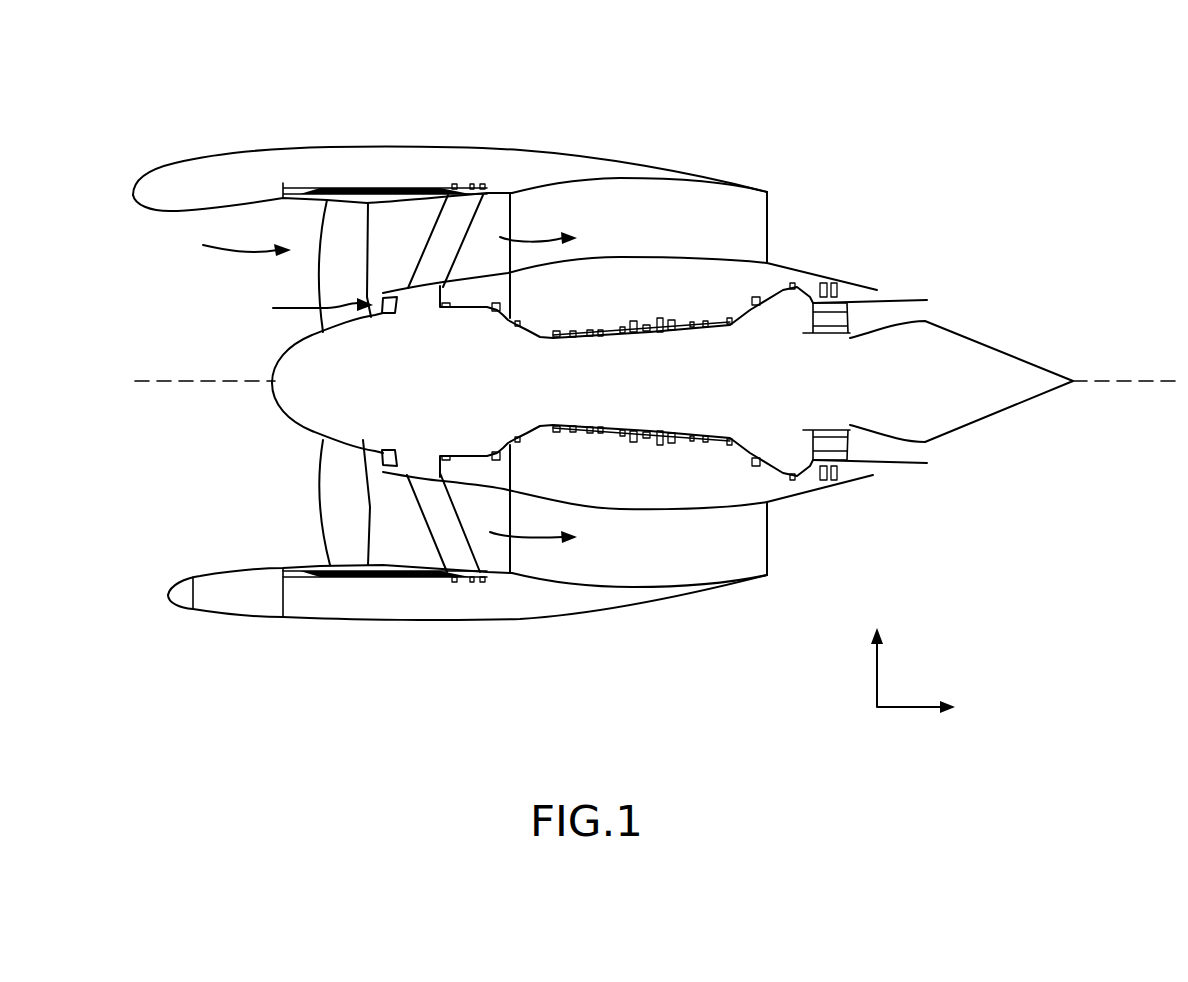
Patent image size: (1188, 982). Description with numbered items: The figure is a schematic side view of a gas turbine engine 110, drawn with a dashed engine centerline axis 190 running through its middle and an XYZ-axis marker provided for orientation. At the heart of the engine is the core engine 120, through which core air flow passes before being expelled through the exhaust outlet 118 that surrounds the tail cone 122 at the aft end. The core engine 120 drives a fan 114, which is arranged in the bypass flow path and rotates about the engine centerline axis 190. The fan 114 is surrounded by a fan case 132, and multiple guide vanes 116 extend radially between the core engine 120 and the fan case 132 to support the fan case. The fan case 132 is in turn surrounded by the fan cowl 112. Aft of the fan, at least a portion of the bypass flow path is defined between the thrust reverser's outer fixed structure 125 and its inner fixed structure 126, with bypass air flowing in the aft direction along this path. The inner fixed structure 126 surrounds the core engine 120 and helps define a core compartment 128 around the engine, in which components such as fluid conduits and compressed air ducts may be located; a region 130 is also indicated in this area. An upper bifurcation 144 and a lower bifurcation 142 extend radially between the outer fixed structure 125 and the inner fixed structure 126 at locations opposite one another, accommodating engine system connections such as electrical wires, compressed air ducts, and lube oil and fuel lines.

The gas turbine engine 110 is at (772, 105).
The fan cowl 112 is at (315, 145).
The fan 114 is at (327, 493).
The guide vanes 116 is at (442, 245).
The exhaust outlet 118 is at (923, 312).
The core engine 120 is at (650, 320).
The tail cone 122 is at (967, 413).
The outer fixed structure 125 is at (597, 190).
The inner fixed structure 126 is at (655, 250).
The core compartment 128 is at (666, 496).
The core cowl 130 is at (733, 478).
The fan case 132 is at (308, 580).
The lower bifurcation 142 is at (748, 566).
The upper bifurcation 144 is at (785, 205).
The engine centerline axis 190 is at (1148, 378).